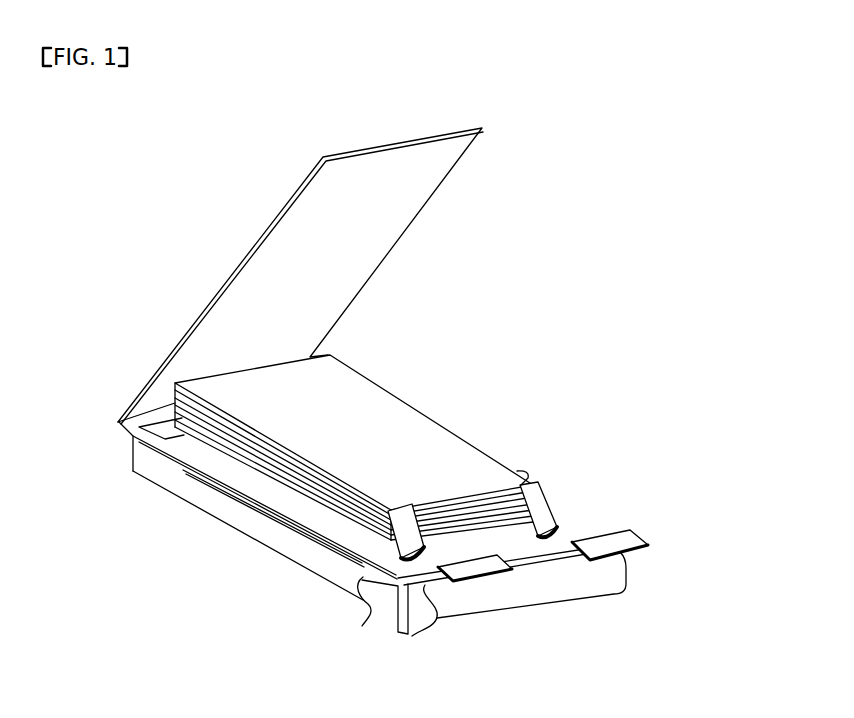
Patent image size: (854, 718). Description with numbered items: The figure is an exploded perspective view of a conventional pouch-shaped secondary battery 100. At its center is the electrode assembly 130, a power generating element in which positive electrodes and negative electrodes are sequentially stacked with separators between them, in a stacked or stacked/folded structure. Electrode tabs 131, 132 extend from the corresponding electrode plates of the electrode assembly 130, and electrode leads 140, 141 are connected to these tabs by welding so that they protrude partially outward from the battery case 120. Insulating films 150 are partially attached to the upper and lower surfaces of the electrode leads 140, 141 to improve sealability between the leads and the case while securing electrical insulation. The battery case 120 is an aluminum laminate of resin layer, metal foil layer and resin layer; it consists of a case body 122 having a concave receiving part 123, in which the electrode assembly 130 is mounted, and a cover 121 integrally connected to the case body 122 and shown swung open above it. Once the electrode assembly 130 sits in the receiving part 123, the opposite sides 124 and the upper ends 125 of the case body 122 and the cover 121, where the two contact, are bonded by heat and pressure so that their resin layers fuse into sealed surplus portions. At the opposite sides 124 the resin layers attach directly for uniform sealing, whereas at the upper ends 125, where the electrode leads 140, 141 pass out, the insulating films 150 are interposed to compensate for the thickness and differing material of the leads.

The pouch-shaped secondary battery 100 is at (107, 163).
The battery case 120 is at (117, 420).
The cover 121 is at (193, 320).
The case body 122 is at (272, 551).
The receiving part 123 is at (210, 458).
The opposite sides 124 is at (240, 490).
The upper ends 125 is at (563, 546).
The electrode assembly 130 is at (430, 376).
The electrode tab 131 is at (397, 536).
The electrode tab 132 is at (558, 496).
The electrode lead 140 is at (372, 610).
The electrode lead 141 is at (614, 513).
The insulating film 150 is at (435, 617).